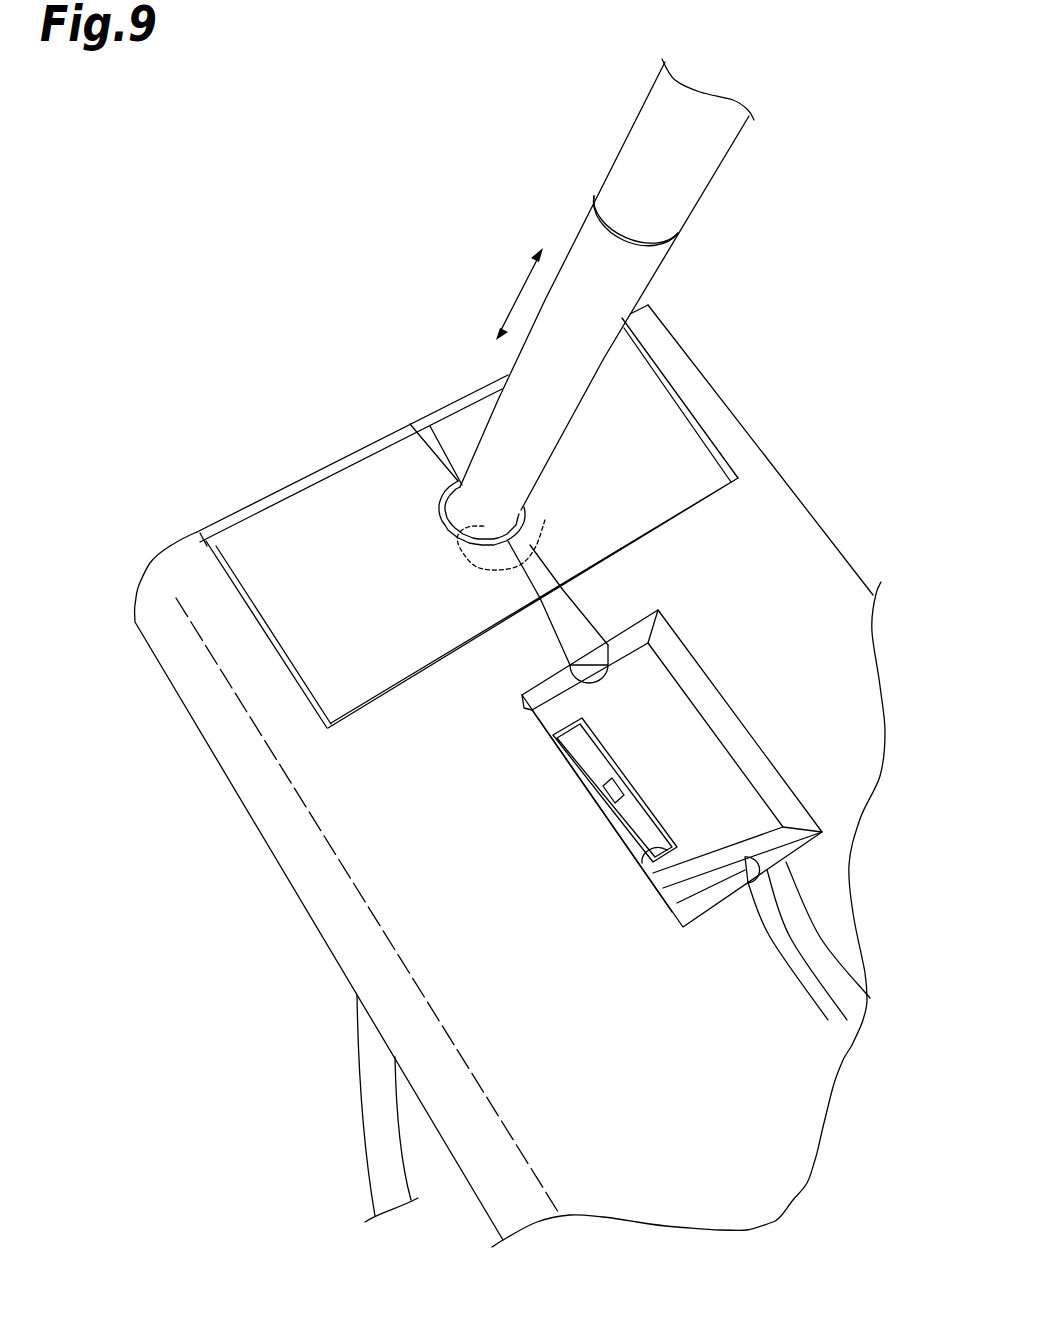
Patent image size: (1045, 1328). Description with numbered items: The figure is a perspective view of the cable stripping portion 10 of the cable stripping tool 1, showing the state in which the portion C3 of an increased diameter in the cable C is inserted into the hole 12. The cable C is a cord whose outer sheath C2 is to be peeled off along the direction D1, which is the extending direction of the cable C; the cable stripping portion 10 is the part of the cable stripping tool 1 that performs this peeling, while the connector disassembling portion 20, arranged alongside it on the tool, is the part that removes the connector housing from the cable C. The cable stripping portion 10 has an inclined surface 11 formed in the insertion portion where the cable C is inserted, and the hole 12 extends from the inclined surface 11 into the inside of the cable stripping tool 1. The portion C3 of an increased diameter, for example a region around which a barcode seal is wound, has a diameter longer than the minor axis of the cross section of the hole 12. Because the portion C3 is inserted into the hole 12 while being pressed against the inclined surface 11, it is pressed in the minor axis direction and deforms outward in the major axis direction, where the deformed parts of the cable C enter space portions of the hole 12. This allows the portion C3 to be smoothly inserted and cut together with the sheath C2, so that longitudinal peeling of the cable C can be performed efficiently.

The cable stripping tool 1 is at (869, 295).
The cable stripping portion 10 is at (424, 391).
The inclined surface 11 is at (446, 497).
The hole 12 is at (500, 518).
The connector disassembling portion 20 is at (711, 765).
The cable C is at (348, 1078).
The sheath C2 is at (693, 166).
The portion of an increased diameter C3 is at (545, 520).
The direction D1 is at (511, 294).